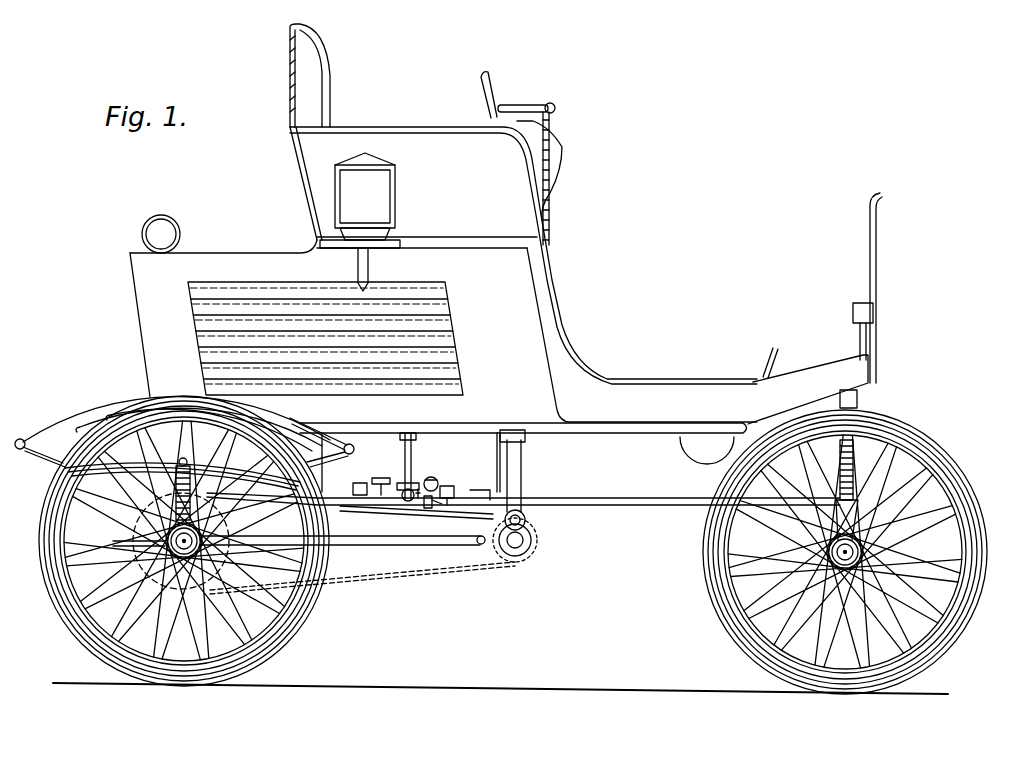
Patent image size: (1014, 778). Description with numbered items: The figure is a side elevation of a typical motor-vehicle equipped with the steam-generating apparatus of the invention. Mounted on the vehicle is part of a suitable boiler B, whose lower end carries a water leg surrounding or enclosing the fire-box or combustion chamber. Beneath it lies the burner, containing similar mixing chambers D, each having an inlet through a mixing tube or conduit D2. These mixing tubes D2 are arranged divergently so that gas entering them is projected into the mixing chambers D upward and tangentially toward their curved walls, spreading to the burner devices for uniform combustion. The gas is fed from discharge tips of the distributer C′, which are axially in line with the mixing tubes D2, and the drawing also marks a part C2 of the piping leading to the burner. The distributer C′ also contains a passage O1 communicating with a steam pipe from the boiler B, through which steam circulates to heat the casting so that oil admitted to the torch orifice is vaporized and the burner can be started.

The boiler B is at (411, 462).
The supply pipe C2 is at (416, 467).
The mixing tube D2 is at (347, 498).
The distributer C′ is at (415, 482).
The passage O1 is at (438, 513).
The mixing chamber D is at (438, 496).